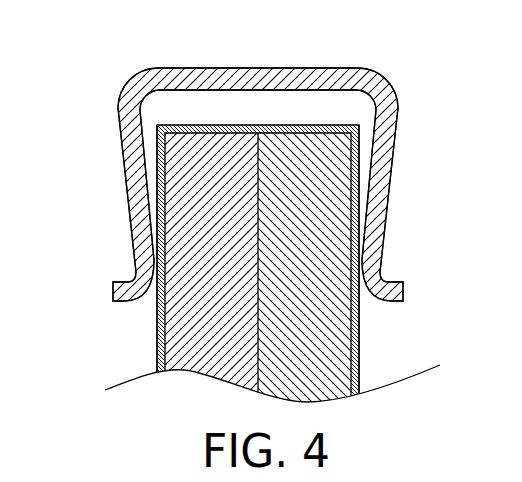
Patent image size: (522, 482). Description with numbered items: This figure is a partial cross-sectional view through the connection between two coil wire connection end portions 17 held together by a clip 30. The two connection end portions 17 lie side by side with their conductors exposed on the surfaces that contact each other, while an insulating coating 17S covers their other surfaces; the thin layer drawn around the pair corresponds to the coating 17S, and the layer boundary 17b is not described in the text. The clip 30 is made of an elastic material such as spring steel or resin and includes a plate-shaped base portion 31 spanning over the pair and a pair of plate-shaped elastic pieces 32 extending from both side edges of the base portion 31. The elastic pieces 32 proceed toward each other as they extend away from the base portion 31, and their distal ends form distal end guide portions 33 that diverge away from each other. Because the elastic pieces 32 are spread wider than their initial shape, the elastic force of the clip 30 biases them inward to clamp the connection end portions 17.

The connection end portion 17 is at (312, 126).
The insulating coating 17S is at (157, 152).
The outer layer of heat generating member 17b is at (157, 198).
The clip 30 is at (385, 82).
The base portion 31 is at (333, 68).
The elastic piece 32 is at (137, 233).
The distal end guide portion 33 is at (117, 299).